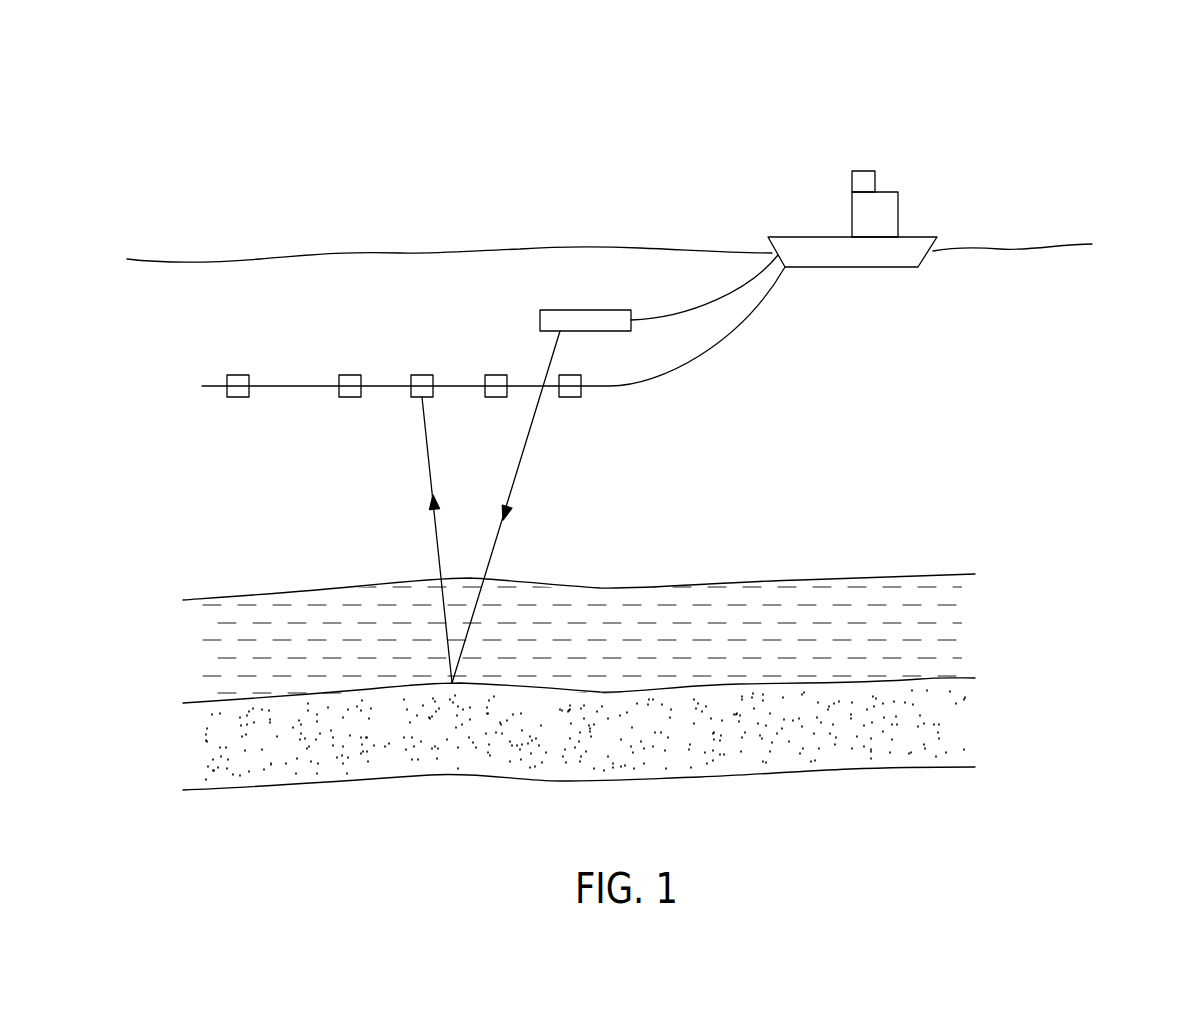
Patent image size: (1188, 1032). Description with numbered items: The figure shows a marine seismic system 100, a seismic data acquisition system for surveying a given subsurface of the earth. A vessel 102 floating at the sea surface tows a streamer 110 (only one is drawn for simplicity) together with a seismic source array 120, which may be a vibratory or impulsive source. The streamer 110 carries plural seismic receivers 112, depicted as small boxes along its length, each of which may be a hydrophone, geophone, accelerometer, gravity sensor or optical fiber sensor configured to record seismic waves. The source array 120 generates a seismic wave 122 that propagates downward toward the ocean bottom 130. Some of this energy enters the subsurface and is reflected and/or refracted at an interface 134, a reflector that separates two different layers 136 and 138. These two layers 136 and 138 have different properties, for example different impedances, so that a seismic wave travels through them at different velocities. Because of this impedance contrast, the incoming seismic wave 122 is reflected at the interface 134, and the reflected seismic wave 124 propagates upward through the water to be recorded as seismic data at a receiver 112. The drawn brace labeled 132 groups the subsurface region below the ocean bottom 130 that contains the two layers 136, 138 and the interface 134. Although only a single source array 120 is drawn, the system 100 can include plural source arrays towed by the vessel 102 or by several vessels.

The marine seismic system 100 is at (1072, 74).
The vessel 102 is at (894, 152).
The streamer 110 is at (493, 357).
The seismic receiver 112 is at (421, 378).
The seismic source array 120 is at (568, 310).
The seismic wave 122 is at (522, 460).
The reflected seismic wave 124 is at (436, 541).
The ocean bottom 130 is at (785, 583).
The subsurface formation 132 is at (628, 658).
The interface 134 is at (663, 683).
The first layer 136 is at (835, 644).
The second layer 138 is at (835, 736).